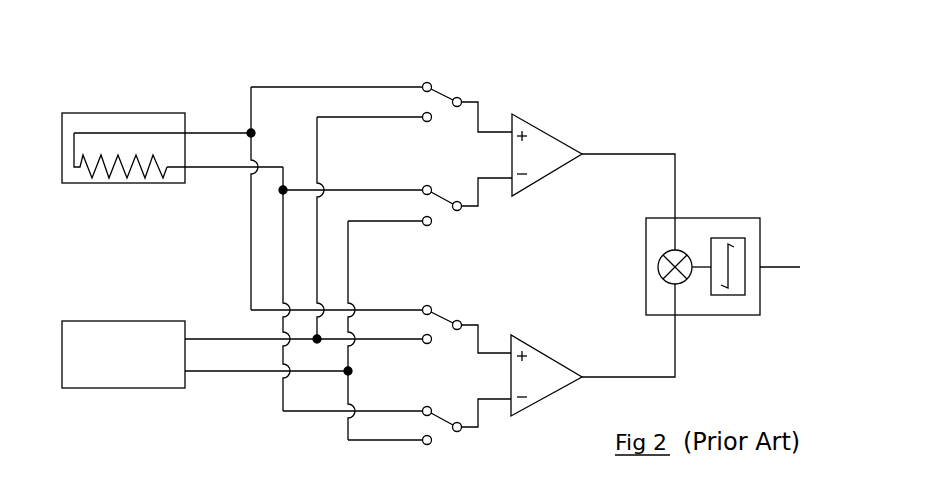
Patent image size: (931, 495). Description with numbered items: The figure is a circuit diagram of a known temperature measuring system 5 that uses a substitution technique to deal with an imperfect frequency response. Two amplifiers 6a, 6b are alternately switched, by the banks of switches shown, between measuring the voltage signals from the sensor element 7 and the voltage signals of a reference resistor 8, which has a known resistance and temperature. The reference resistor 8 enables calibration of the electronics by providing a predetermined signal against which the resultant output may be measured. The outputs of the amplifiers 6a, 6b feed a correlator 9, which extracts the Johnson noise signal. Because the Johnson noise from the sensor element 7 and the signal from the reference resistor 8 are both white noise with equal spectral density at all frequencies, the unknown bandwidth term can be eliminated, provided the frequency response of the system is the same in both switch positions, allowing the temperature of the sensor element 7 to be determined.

The system 5 is at (364, 235).
The amplifier 6a is at (593, 161).
The amplifier 6b is at (593, 365).
The sensor element 7 is at (123, 137).
The reference resistor 8 is at (123, 339).
The correlator 9 is at (723, 251).